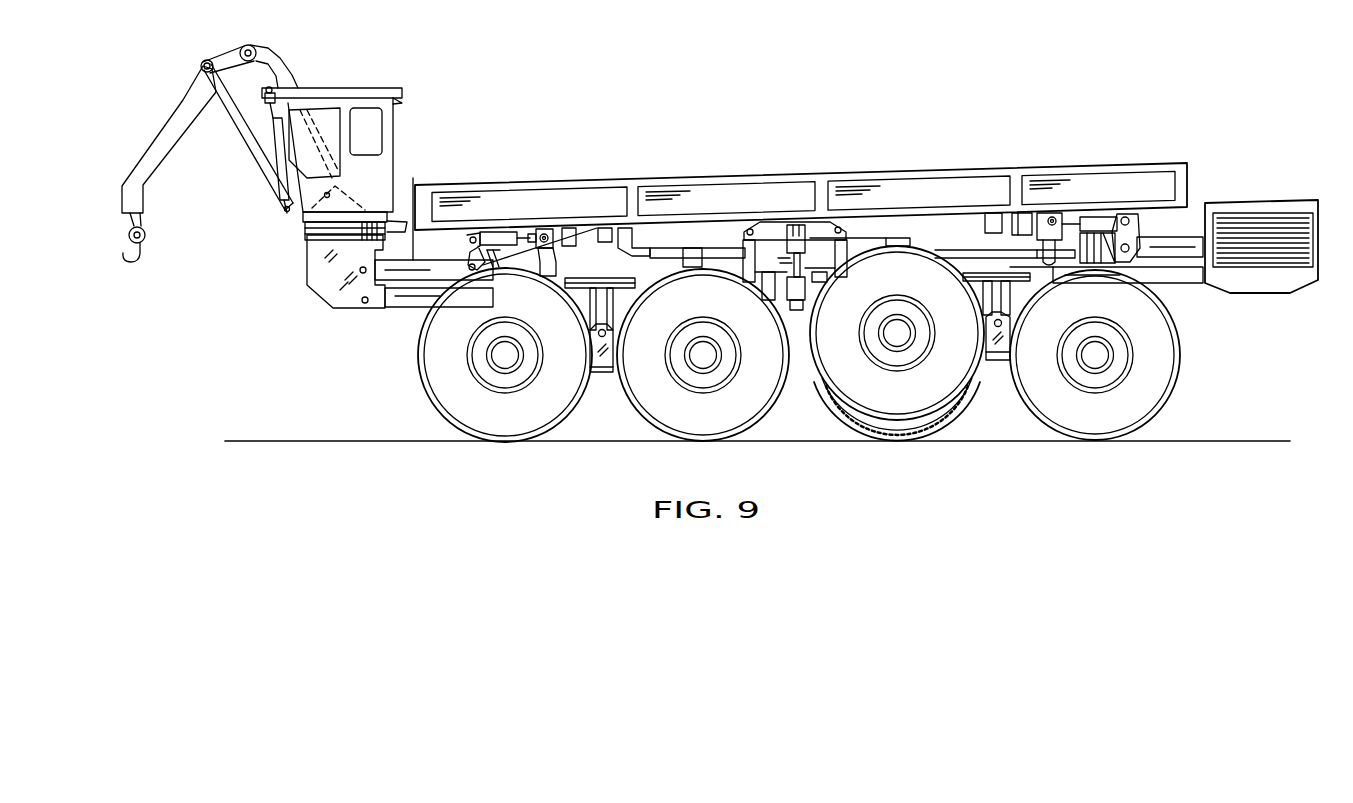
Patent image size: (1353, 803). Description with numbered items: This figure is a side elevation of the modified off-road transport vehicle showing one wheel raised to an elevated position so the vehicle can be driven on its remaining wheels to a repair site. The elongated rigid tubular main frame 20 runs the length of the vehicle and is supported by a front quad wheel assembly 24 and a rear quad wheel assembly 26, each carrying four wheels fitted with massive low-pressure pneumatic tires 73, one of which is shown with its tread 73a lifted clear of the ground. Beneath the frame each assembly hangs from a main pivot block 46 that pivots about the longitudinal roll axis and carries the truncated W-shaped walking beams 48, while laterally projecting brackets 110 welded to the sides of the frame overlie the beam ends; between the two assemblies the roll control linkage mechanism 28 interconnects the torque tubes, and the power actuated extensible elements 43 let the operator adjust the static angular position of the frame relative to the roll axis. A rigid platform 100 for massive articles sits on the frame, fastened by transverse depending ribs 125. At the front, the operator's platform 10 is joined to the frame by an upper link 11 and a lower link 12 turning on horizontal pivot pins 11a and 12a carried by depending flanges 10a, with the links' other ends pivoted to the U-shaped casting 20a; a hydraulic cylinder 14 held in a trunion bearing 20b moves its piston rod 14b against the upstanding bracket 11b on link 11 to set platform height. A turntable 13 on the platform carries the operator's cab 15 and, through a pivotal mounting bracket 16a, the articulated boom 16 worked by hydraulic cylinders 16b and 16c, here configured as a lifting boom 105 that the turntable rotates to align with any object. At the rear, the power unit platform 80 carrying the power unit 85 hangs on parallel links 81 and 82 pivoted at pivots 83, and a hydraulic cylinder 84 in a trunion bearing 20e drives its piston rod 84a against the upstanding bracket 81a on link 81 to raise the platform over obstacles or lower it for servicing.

The boom 105 is at (173, 128).
The articulated tree handling boom 16 is at (285, 62).
The operator's cab 15 is at (340, 95).
The pivotal mounting bracket 16a is at (338, 160).
The hydraulic cylinder 16b is at (247, 152).
The hydraulic cylinder 16c is at (285, 170).
The upper platform supporting link 11 is at (434, 213).
The turntable 13 is at (307, 232).
The depending flanges 10a is at (310, 260).
The operator's platform 10 is at (305, 285).
The pivot pin 11a is at (322, 295).
The lower platform supporting link 12 is at (410, 298).
The pivot pin 12a is at (365, 304).
The upstanding bracket 11b is at (467, 237).
The piston rod 14b is at (497, 232).
The trunion bearing 20b is at (543, 233).
The hydraulic cylinder 14 is at (570, 228).
The U-shaped casting 20a is at (475, 270).
The transverse depending ribs 125 is at (598, 242).
The laterally projecting brackets 110 is at (633, 250).
The main frame 20 is at (650, 248).
The roll control linkage mechanism 28 is at (766, 225).
The rigid platform 100 is at (878, 170).
The main pivot block 46 is at (567, 302).
The walking beam 48 is at (603, 372).
The front quad wheel assembly 24 is at (420, 397).
The tires 73 is at (687, 418).
The power actuated extensible elements 43 is at (822, 273).
The wheel tread ring 73a is at (885, 398).
The rear quad wheel assembly 26 is at (1172, 405).
The trunion bearing 20e is at (1047, 225).
The hydraulic cylinder 84 is at (1043, 220).
The piston rod 84a is at (1100, 240).
The pivots 83 is at (1128, 242).
The upstanding bracket 81a is at (1126, 220).
The parallel link 81 is at (1193, 237).
The parallel link 82 is at (1187, 282).
The power unit platform 80 is at (1288, 293).
The power unit 85 is at (1262, 200).